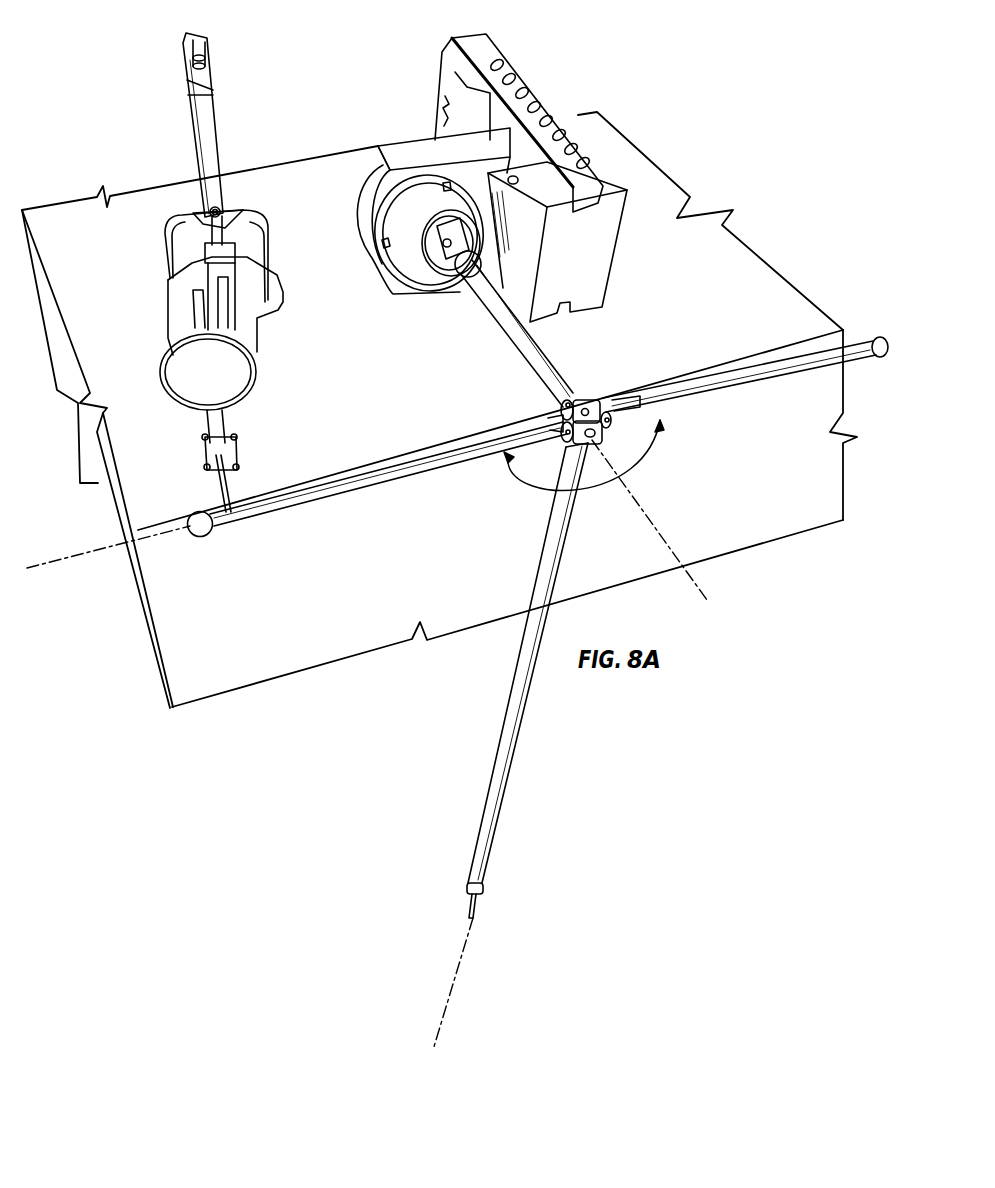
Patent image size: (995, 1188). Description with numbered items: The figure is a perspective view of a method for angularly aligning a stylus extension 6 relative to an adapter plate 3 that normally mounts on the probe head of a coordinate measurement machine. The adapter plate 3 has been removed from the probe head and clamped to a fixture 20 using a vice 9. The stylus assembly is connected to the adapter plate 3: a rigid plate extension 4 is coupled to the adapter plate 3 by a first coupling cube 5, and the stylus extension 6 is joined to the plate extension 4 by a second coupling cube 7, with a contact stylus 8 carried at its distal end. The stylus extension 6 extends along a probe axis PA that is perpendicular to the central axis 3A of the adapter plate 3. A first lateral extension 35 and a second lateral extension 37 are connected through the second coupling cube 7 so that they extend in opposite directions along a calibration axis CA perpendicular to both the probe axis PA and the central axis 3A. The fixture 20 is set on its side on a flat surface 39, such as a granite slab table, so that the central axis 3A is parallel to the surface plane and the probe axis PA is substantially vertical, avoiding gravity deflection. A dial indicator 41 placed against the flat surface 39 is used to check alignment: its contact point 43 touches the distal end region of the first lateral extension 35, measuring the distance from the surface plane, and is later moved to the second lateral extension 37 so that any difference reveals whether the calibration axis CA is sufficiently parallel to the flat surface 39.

The adapter plate 3 is at (407, 263).
The plate extension 4 is at (540, 360).
The first coupling cube 5 is at (440, 262).
The stylus extension 6 is at (505, 803).
The second coupling cube 7 is at (590, 392).
The contact stylus 8 is at (478, 904).
The vice 9 is at (487, 50).
The fixture 20 is at (402, 150).
The first lateral extension 35 is at (340, 500).
The second lateral extension 37 is at (704, 398).
The flat surface 39 is at (379, 422).
The dial indicator 41 is at (186, 228).
The contact point 43 is at (238, 510).
The calibration axis CA is at (120, 540).
The central axis 3A is at (695, 583).
The probe axis PA is at (452, 990).